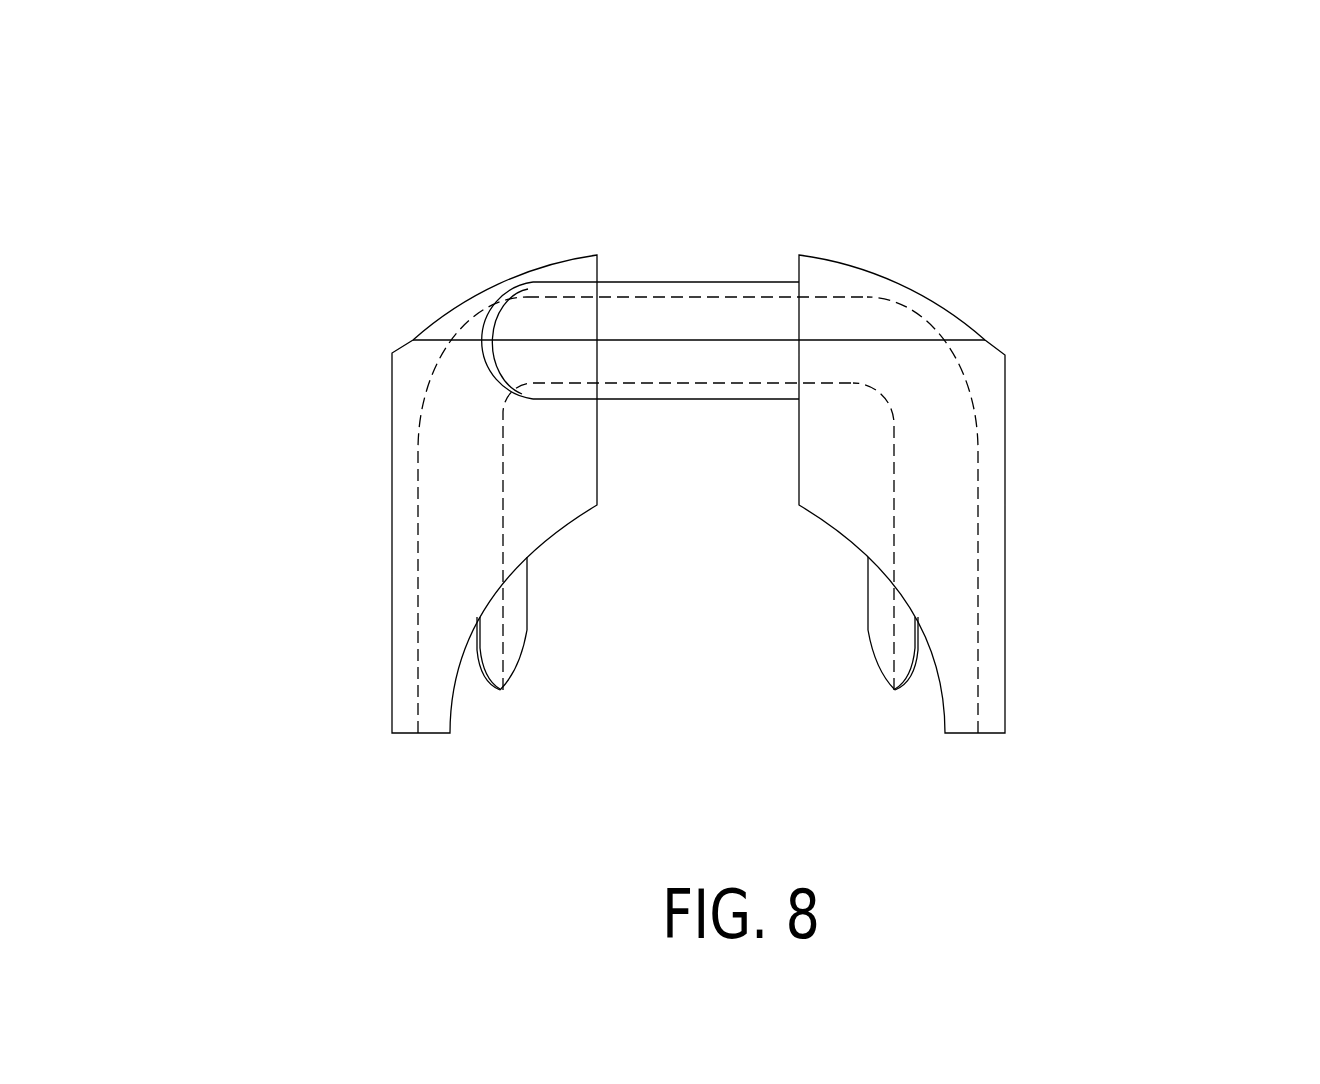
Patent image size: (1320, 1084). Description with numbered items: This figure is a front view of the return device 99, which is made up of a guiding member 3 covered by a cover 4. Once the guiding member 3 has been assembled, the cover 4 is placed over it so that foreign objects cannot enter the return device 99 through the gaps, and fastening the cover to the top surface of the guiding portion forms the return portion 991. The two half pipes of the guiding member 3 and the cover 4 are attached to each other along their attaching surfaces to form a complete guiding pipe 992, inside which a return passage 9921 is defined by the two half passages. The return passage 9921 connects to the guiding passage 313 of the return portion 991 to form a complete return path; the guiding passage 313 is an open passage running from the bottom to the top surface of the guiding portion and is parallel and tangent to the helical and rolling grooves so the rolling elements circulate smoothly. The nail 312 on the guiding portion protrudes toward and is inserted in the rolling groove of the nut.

The return device 99 is at (696, 395).
The return portion 991 is at (380, 502).
The guiding pipe 992 is at (752, 268).
The return passage 9921 is at (680, 282).
The cover 4 is at (537, 257).
The guiding member 3 is at (708, 451).
The nail 312 is at (883, 627).
The guiding passage 313 is at (417, 533).